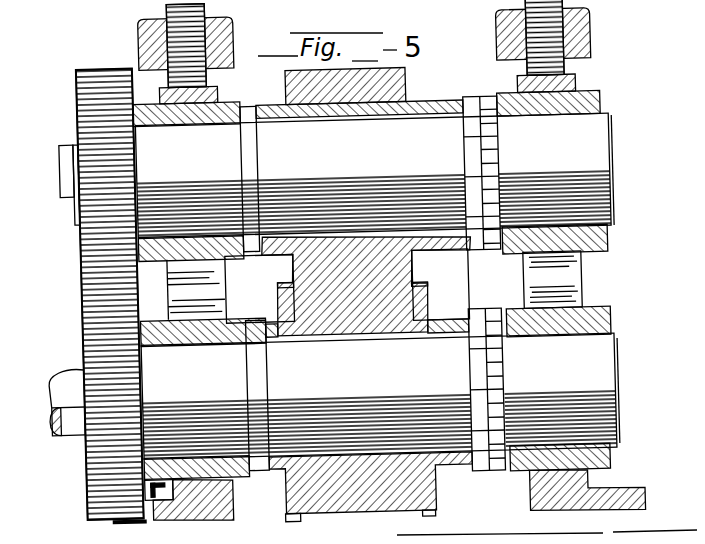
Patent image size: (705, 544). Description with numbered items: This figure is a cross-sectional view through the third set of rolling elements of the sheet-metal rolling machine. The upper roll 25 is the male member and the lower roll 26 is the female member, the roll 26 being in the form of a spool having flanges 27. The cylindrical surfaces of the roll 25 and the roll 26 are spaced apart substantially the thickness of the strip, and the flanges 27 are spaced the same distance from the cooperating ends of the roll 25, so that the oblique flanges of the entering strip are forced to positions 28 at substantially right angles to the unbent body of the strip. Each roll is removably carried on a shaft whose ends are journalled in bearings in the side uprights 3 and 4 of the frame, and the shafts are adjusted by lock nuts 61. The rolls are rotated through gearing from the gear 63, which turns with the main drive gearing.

The side upright 3 is at (167, 297).
The side upright 4 is at (571, 309).
The roll 25 is at (411, 82).
The roll 26 is at (431, 302).
The flanges 27 is at (284, 288).
The flanges at right angles 28 is at (284, 273).
The lock nuts 61 is at (493, 256).
The gear 63 is at (83, 486).